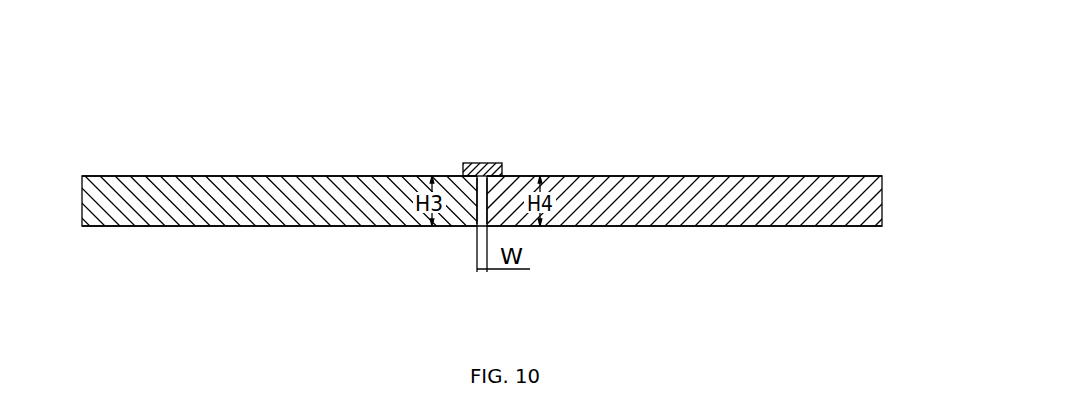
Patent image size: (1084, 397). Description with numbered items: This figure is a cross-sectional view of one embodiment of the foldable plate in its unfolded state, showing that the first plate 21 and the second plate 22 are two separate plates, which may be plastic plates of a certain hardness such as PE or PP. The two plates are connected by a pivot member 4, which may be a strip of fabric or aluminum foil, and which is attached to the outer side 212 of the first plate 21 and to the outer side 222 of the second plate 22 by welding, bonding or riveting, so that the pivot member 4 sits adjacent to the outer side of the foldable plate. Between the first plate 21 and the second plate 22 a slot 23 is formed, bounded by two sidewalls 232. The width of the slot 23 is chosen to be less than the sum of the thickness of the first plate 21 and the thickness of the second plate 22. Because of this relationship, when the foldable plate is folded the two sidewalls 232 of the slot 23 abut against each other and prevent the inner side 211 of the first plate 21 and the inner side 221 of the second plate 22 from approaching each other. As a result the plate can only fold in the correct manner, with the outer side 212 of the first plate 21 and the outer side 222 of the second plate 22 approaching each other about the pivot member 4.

The first plate 21 is at (255, 203).
The outer side of the first plate 212 is at (275, 175).
The inner side of the first plate 211 is at (287, 227).
The second plate 22 is at (705, 202).
The outer side of the second plate 222 is at (828, 175).
The inner side of the second plate 221 is at (758, 227).
The slot 23 is at (481, 209).
The sidewalls of the slot 232 is at (475, 192).
The pivot member 4 is at (492, 165).